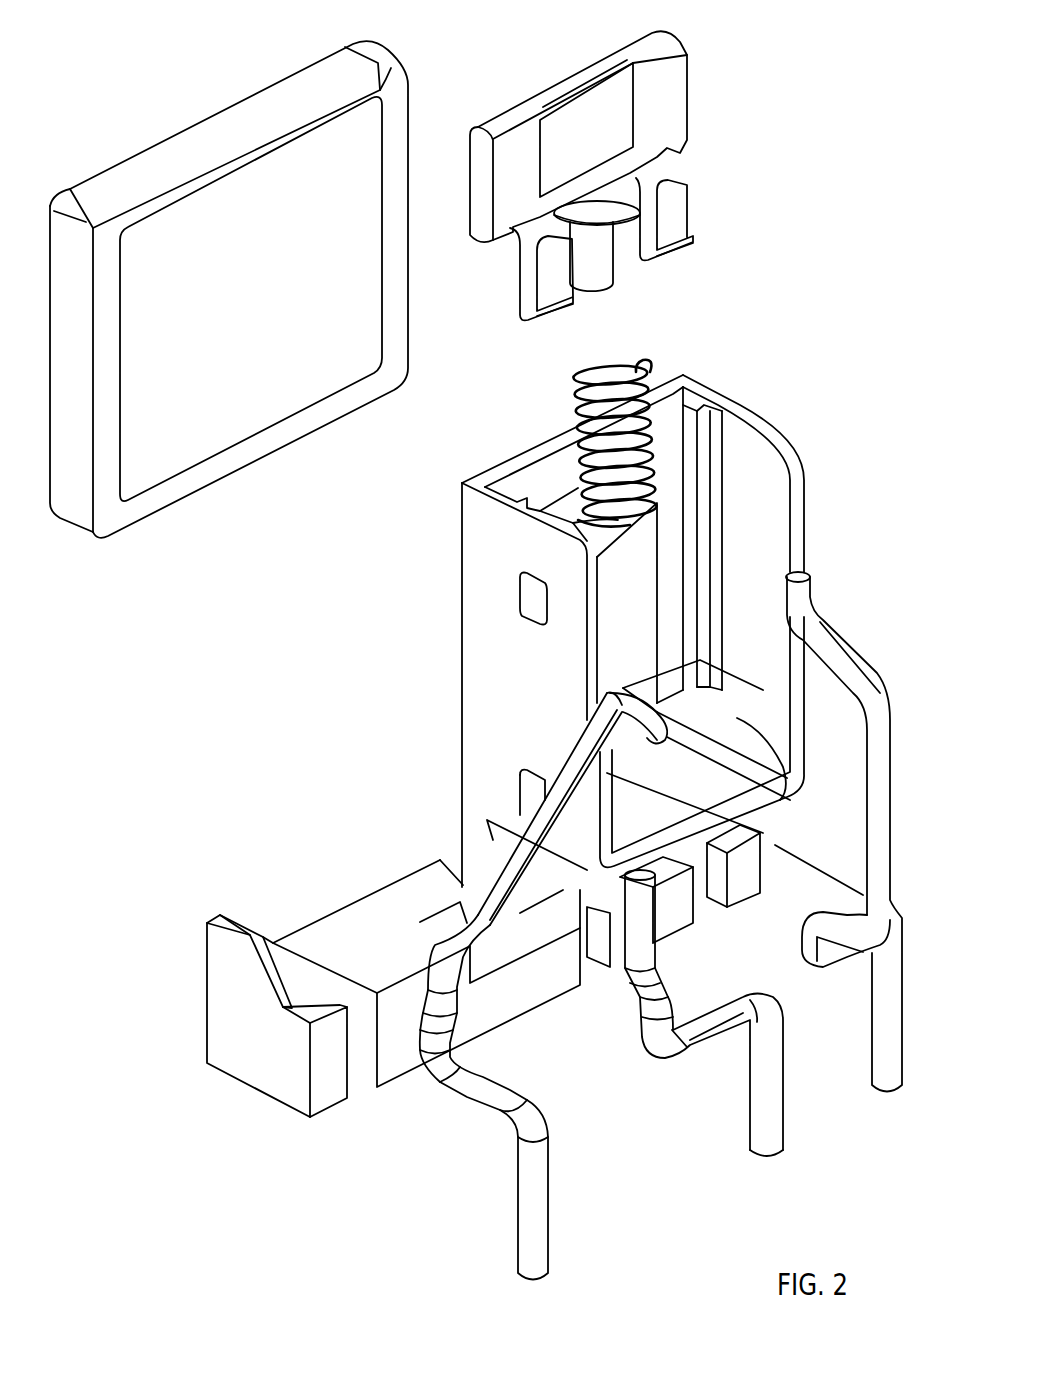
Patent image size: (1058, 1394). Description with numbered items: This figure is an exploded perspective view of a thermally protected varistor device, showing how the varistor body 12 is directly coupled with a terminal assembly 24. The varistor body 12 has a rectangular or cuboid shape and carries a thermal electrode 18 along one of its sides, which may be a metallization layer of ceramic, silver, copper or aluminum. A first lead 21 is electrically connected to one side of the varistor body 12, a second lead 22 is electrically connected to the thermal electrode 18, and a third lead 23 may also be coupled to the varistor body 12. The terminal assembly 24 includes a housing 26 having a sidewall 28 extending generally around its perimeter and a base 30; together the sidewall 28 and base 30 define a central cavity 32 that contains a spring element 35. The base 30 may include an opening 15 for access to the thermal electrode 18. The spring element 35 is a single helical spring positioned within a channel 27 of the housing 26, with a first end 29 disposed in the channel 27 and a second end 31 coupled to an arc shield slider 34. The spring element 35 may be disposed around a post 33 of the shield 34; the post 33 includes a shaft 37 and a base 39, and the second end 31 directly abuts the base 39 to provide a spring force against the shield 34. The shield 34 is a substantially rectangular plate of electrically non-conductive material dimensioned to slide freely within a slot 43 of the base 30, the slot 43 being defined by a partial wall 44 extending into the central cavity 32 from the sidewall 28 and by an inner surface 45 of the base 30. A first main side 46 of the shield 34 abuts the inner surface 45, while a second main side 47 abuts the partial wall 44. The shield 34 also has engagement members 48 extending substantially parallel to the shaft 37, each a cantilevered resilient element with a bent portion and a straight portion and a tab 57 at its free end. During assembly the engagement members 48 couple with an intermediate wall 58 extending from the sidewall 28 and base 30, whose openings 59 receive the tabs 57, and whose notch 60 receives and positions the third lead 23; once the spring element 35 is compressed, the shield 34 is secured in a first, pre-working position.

The varistor body 12 is at (229, 289).
The thermal electrode 18 is at (223, 335).
The terminal assembly 24 is at (872, 104).
The arc shield slider 34 is at (610, 178).
The first main side 46 is at (515, 107).
The second main side 47 is at (663, 110).
The base 39 is at (620, 197).
The engagement members 48 is at (527, 270).
The tab 57 is at (693, 247).
The shaft 37 is at (597, 290).
The post 33 is at (625, 269).
The second end 31 is at (627, 365).
The spring element 35 is at (660, 418).
The partial wall 44 is at (710, 427).
The inner surface 45 is at (670, 473).
The housing 26 is at (646, 647).
The central cavity 32 is at (753, 516).
The base 30 is at (667, 553).
The sidewall 28 is at (497, 660).
The first end 29 is at (618, 521).
The slot 43 is at (510, 483).
The opening 15 is at (556, 486).
The intermediate wall 58 is at (723, 708).
The openings 59 is at (737, 718).
The channel 27 is at (660, 745).
The notch 60 is at (648, 737).
The first lead 21 is at (532, 1238).
The second lead 22 is at (762, 1142).
The third lead 23 is at (890, 1077).